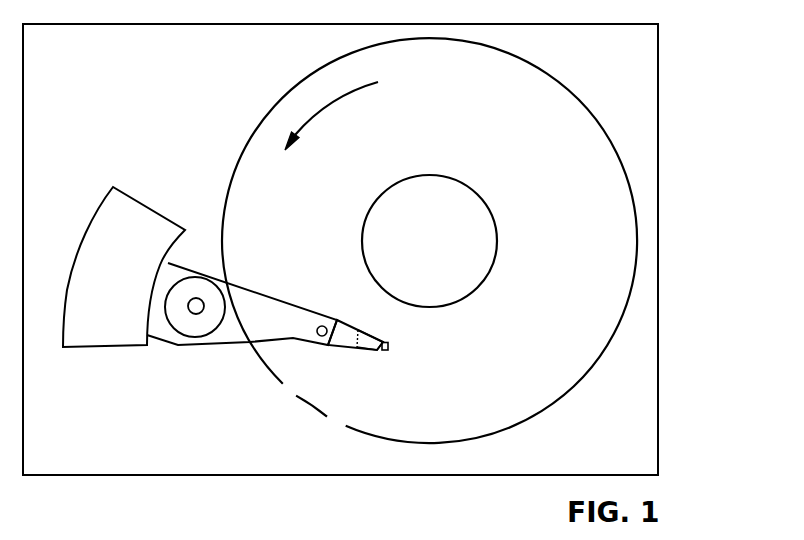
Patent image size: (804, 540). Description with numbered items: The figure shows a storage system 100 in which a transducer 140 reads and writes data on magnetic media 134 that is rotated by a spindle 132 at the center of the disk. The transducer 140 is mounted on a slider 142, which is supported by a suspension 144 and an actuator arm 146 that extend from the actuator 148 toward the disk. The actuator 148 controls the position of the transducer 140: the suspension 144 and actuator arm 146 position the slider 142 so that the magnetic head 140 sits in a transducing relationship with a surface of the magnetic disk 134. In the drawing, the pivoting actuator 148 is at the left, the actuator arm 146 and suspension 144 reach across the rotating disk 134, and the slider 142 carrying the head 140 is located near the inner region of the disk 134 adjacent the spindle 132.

The storage system 100 is at (683, 55).
The spindle 132 is at (468, 186).
The magnetic media 134 is at (578, 263).
The transducer 140 is at (388, 344).
The slider 142 is at (385, 341).
The suspension 144 is at (343, 347).
The actuator arm 146 is at (253, 288).
The actuator 148 is at (188, 310).